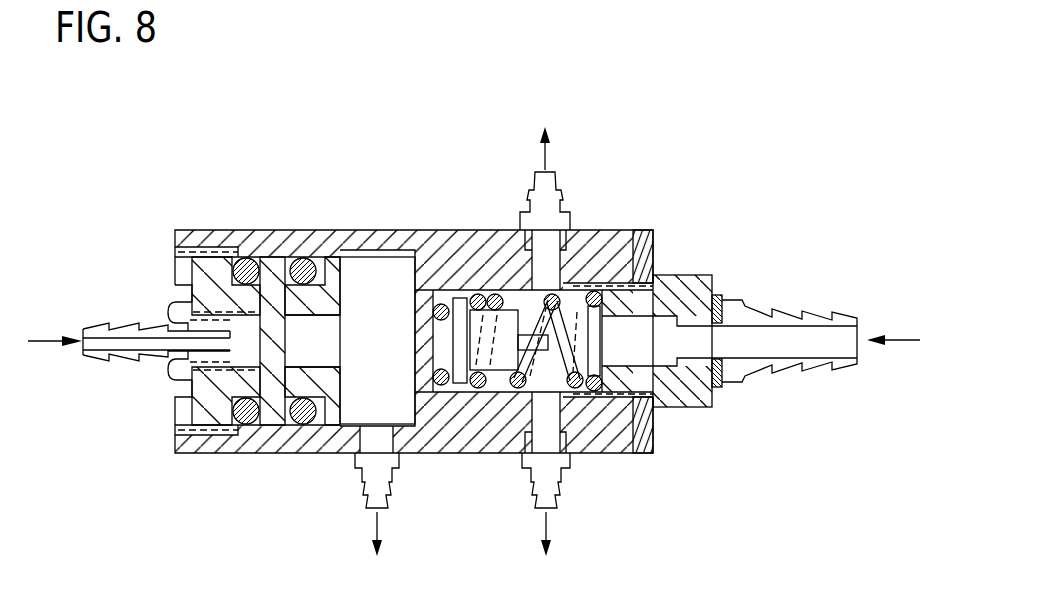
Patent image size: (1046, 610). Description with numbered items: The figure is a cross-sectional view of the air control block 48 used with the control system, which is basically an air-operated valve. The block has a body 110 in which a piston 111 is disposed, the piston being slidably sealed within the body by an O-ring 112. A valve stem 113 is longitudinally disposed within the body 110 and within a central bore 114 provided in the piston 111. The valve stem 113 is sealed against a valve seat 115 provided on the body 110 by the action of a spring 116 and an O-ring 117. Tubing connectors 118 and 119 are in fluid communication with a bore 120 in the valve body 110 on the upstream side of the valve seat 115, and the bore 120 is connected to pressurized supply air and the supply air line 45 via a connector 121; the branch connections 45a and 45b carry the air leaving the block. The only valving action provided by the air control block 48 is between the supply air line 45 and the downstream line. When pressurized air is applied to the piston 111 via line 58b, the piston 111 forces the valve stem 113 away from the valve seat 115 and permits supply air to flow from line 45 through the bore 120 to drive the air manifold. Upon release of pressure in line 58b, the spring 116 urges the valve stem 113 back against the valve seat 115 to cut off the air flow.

The air control block 48 is at (474, 230).
The body 110 is at (402, 248).
The piston 111 is at (287, 395).
The O-ring 112 is at (287, 453).
The valve stem 113 is at (316, 345).
The central bore 114 is at (307, 248).
The valve seat 115 is at (440, 387).
The spring 116 is at (590, 395).
The O-ring 117 is at (445, 380).
The tubing connector 118 is at (543, 205).
The tubing connector 119 is at (545, 480).
The bore 120 is at (573, 290).
The connector 121 is at (723, 303).
The supply air line 45 is at (761, 341).
The outlet branch conduit 45a is at (464, 522).
The outlet branch conduit 45b is at (556, 137).
The line 58b is at (140, 341).